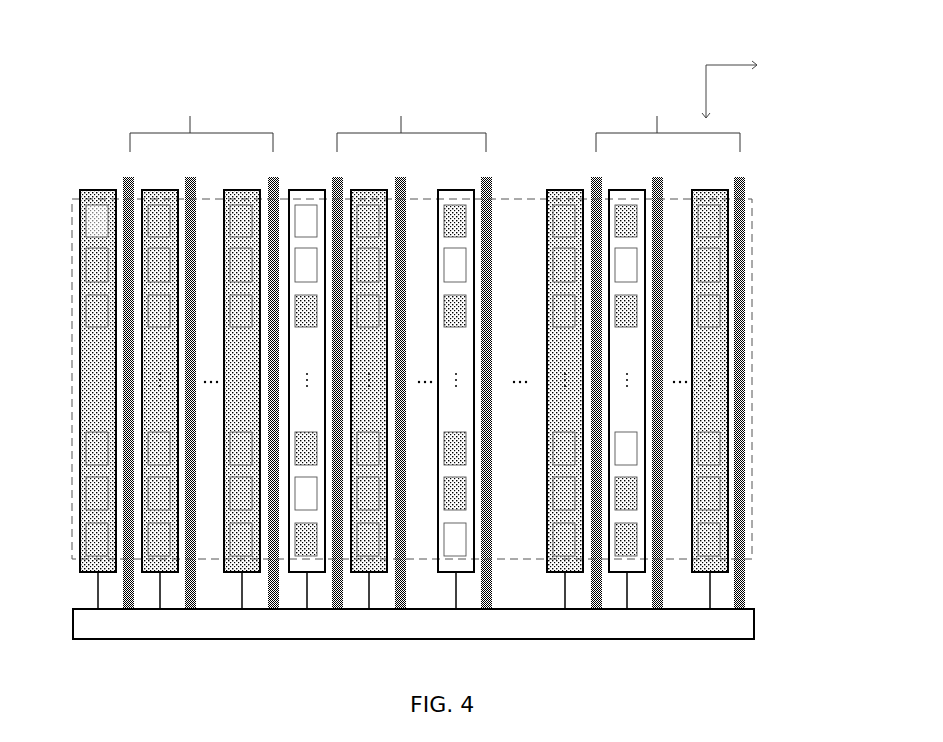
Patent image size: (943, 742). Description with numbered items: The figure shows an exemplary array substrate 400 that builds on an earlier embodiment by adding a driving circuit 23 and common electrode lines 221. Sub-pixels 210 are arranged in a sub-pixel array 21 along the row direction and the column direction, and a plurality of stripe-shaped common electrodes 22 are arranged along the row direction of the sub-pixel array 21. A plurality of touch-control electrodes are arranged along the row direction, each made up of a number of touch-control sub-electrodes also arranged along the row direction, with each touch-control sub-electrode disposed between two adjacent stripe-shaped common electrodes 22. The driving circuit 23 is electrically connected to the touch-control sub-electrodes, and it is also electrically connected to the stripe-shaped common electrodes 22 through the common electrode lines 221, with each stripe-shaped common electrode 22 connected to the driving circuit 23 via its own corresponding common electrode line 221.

The array substrate 400 is at (642, 28).
The sub-pixel array 21 is at (754, 280).
The stripe-shaped common electrode 22 is at (74, 381).
The sub-pixel 210 is at (85, 268).
The common electrode line 221 is at (710, 592).
The driving circuit 23 is at (755, 628).